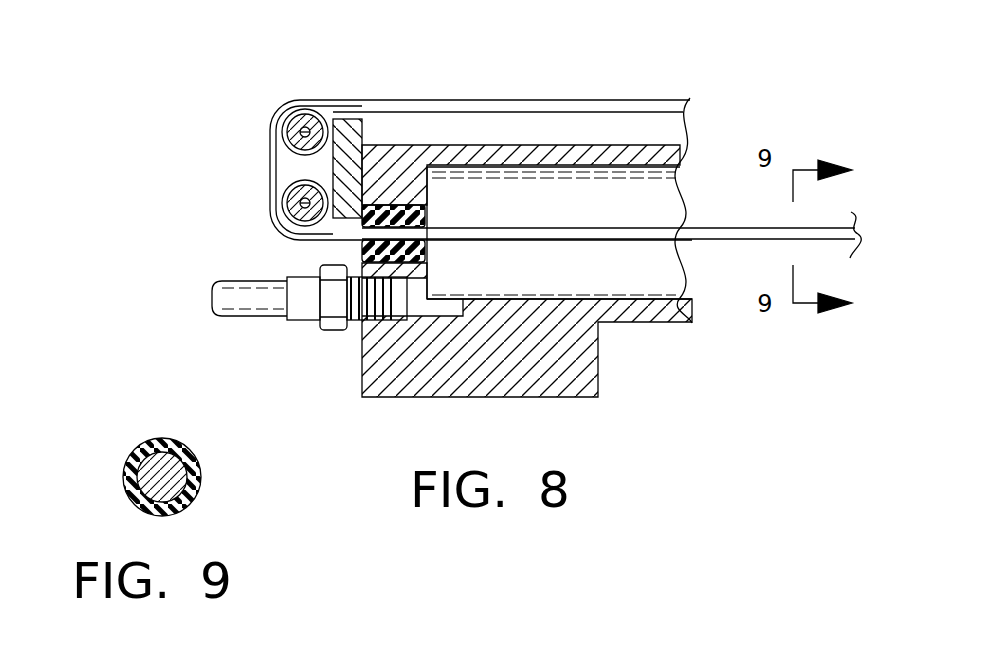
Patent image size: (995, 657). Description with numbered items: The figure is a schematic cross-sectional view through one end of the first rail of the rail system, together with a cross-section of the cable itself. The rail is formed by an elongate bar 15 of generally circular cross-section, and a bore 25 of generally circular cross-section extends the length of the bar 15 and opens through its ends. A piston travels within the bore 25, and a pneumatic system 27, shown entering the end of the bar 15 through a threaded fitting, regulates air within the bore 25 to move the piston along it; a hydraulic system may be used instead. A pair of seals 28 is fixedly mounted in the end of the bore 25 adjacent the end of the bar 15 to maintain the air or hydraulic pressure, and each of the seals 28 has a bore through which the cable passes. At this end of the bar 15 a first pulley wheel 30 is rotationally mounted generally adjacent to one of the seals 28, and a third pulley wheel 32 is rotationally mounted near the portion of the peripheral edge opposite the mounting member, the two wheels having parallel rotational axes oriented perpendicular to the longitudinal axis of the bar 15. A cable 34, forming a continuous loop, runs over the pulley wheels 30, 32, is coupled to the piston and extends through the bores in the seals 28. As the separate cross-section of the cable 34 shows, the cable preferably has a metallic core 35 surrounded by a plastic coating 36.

In FIG. 8, the elongate bar 15 is at (680, 152).
In FIG. 8, the bore 25 is at (630, 275).
In FIG. 8, the pneumatic system 27 is at (283, 307).
In FIG. 8, the seals 28 is at (362, 226).
In FIG. 8, the first pulley wheel 30 is at (304, 206).
In FIG. 8, the third pulley wheel 32 is at (300, 130).
In FIG. 8, the cable 34 is at (471, 103).
In FIG. 9, the metallic core 35 is at (142, 488).
In FIG. 9, the plastic coating 36 is at (156, 440).